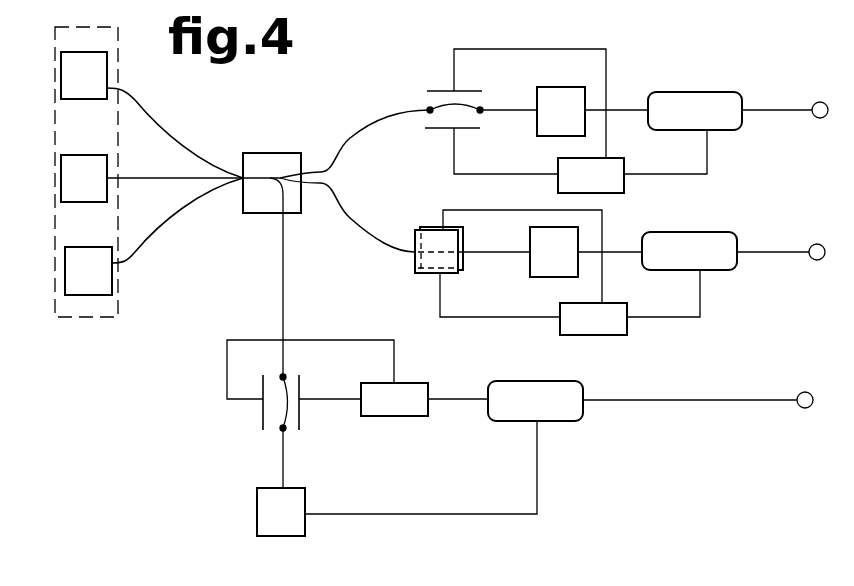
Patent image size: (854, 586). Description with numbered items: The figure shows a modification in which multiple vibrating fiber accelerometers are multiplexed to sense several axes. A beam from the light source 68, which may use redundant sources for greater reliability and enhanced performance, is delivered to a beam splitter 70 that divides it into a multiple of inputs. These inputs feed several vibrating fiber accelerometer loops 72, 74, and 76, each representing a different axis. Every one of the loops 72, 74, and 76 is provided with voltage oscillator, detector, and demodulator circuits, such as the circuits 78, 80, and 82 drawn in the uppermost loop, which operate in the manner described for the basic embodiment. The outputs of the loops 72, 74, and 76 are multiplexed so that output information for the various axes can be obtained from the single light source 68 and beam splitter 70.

The light source 68 is at (56, 80).
The beam splitter 70 is at (277, 157).
The vibrating fiber accelerometer loop 72 is at (574, 117).
The vibrating fiber accelerometer loop 74 is at (418, 313).
The vibrating fiber accelerometer loop 76 is at (242, 477).
The voltage oscillator circuit 78 is at (553, 92).
The detector circuit 80 is at (624, 171).
The demodulator circuit 82 is at (719, 96).